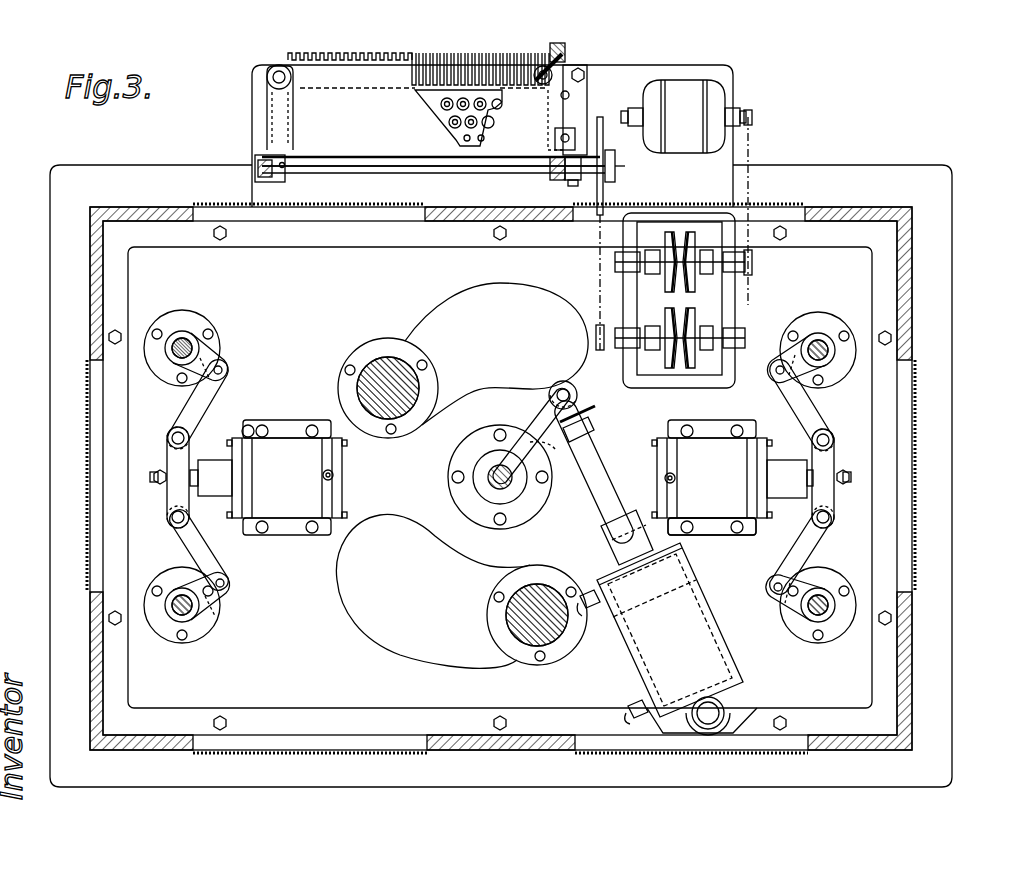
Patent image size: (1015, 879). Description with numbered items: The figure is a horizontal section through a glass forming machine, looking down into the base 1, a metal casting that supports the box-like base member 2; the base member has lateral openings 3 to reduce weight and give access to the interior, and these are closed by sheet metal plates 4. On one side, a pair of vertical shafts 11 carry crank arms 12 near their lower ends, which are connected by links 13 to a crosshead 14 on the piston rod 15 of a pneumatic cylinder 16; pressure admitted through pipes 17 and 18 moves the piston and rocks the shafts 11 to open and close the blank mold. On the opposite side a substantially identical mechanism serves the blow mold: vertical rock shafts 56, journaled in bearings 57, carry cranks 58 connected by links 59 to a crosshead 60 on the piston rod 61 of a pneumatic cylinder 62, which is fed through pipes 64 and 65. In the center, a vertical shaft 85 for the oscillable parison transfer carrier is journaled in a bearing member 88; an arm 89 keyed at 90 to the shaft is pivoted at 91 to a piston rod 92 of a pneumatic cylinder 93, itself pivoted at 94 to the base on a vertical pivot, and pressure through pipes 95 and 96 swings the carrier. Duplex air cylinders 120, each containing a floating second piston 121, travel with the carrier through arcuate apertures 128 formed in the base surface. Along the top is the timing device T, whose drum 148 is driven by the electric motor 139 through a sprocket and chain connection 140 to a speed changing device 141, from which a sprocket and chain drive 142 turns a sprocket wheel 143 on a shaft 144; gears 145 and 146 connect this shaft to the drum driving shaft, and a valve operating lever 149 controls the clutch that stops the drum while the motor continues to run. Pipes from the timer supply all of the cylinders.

The base 1 is at (952, 315).
The base member 2 is at (912, 240).
The lateral openings 3 is at (405, 207).
The plates 4 is at (223, 207).
The timing device T is at (244, 114).
The vertical shafts 11 is at (818, 345).
The crank arms 12 is at (775, 366).
The links 13 is at (810, 410).
The crosshead 14 is at (830, 500).
The piston rod 15 is at (810, 470).
The pneumatic cylinder 16 is at (715, 515).
The pipe 17 is at (675, 478).
The pipe 18 is at (752, 522).
The vertical rock shafts 56 is at (180, 345).
The bearings 57 is at (192, 325).
The cranks 58 is at (215, 356).
The links 59 is at (215, 400).
The crosshead 60 is at (165, 452).
The piston rod 61 is at (190, 478).
The pneumatic cylinder 62 is at (292, 510).
The pipe 64 is at (243, 436).
The pipe 65 is at (330, 477).
The vertical shaft 85 is at (493, 485).
The bearing member 88 is at (465, 455).
The arm 89 is at (528, 418).
The key 90 is at (520, 458).
The pivot 91 is at (578, 395).
The piston rod 92 is at (602, 476).
The pneumatic cylinder 93 is at (740, 660).
The pivot 94 is at (708, 722).
The pipe 95 is at (588, 608).
The pipe 96 is at (630, 712).
The duplex air cylinder 120 is at (400, 355).
The second piston 121 is at (425, 378).
The arcuate apertures 128 is at (445, 293).
The electric motor 139 is at (712, 96).
The sprocket and chain connection 140 is at (752, 160).
The speed changing device 141 is at (738, 318).
The sprocket and chain drive 142 is at (595, 272).
The sprocket wheel 143 is at (603, 200).
The shaft 144 is at (435, 172).
The gear 145 is at (552, 185).
The gear 146 is at (567, 48).
The drum 148 is at (435, 55).
The valve operating lever 149 is at (560, 64).